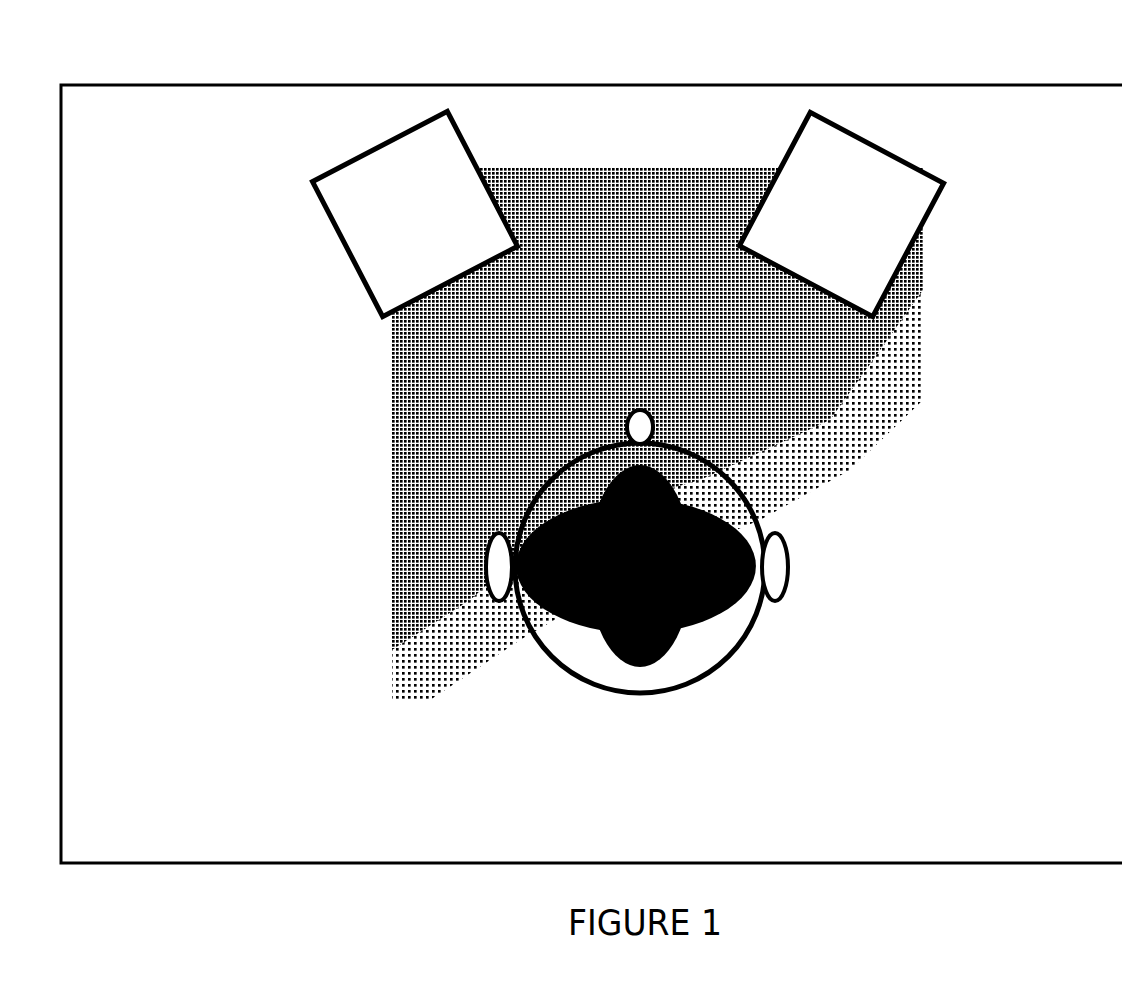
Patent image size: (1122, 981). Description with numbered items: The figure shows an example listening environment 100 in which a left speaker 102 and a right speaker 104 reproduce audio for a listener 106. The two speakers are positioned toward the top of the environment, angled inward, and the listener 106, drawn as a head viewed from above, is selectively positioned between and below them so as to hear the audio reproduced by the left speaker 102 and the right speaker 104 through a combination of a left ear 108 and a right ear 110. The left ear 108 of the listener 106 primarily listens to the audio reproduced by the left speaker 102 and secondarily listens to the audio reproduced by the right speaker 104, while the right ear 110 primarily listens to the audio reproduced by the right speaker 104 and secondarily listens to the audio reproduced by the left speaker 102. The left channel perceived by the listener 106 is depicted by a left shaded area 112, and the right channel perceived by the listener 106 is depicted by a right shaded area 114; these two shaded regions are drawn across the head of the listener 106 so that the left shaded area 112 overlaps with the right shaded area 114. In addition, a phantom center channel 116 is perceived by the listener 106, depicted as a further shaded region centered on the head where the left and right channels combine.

The listening environment 100 is at (753, 85).
The left speaker 102 is at (414, 213).
The right speaker 104 is at (841, 214).
The listener 106 is at (687, 483).
The left ear 108 is at (487, 570).
The right ear 110 is at (788, 582).
The left shaded area 112 is at (555, 603).
The right shaded area 114 is at (728, 587).
The phantom center channel 116 is at (637, 627).